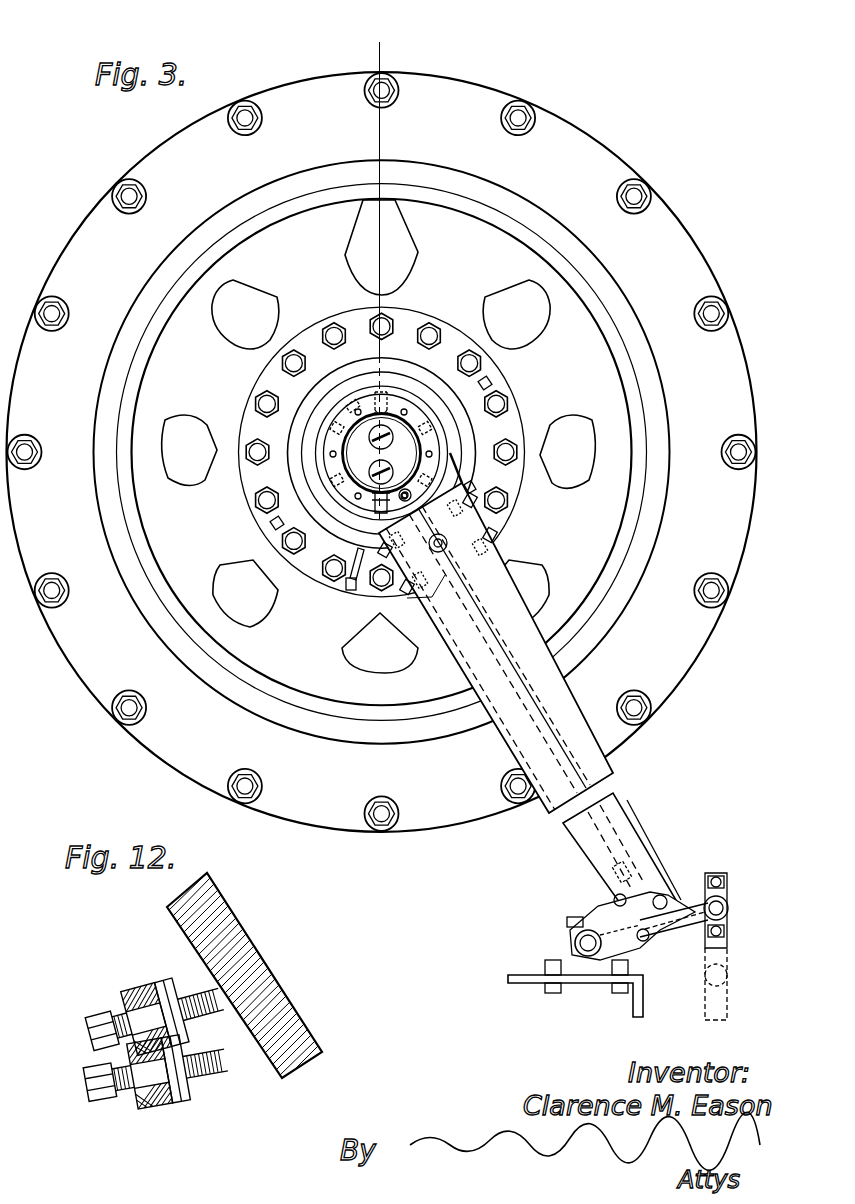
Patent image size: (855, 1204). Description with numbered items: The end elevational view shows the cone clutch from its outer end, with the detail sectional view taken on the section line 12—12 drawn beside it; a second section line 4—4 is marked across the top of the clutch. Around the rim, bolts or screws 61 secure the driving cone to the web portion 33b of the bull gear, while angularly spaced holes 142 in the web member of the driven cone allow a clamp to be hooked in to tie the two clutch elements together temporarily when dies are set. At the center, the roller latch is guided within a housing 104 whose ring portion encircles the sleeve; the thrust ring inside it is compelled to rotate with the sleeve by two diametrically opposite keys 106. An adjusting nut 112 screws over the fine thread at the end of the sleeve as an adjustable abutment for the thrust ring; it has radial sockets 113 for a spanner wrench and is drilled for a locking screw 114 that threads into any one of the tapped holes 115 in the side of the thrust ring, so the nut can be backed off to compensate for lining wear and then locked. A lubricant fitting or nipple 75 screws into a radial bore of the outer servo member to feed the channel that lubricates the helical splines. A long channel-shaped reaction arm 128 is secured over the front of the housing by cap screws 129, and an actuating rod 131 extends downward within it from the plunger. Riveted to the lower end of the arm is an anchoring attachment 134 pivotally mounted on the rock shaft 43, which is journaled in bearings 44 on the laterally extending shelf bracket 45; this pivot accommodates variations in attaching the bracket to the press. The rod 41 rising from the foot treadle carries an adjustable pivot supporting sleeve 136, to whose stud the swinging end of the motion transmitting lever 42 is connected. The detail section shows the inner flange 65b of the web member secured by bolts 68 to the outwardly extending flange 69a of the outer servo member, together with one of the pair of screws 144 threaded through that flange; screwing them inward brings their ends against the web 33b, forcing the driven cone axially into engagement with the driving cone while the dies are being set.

In FIG. 3, the section line 4- 4 is at (398, 52).
In FIG. 3, the section line 12— 12 is at (449, 352).
In FIG. 3, the bolts or screws 61 is at (702, 306).
In FIG. 3, the lubricant fitting or nipple 75 is at (347, 590).
In FIG. 3, the housing 104 is at (320, 467).
In FIG. 3, the keys 106 is at (405, 390).
In FIG. 3, the adjusting nut 112 is at (345, 404).
In FIG. 3, the radial sockets 113 is at (331, 429).
In FIG. 3, the locking screw 114 is at (474, 486).
In FIG. 3, the tapped holes 115 is at (378, 410).
In FIG. 3, the channel-shaped reaction arm 128 is at (500, 735).
In FIG. 3, the cap screws 129 is at (498, 530).
In FIG. 3, the actuating rod 131 is at (573, 742).
In FIG. 3, the anchoring attachment 134 is at (590, 915).
In FIG. 3, the pivot supporting sleeve 136 is at (724, 900).
In FIG. 3, the holes 142 is at (420, 270).
In FIG. 3, the screws 144 is at (492, 380).
In FIG. 12, the screws 144 is at (123, 1082).
In FIG. 3, the rod 41 is at (726, 945).
In FIG. 3, the motion transmitting arm or lever 42 is at (688, 915).
In FIG. 3, the rock shaft 43 is at (588, 950).
In FIG. 3, the bearings 44 is at (555, 975).
In FIG. 3, the shelf bracket 45 is at (518, 985).
In FIG. 12, the web portion 33b is at (188, 916).
In FIG. 12, the inner flange 65b is at (110, 992).
In FIG. 12, the bolts 68 is at (118, 1009).
In FIG. 12, the outwardly extending flange 69a is at (137, 972).